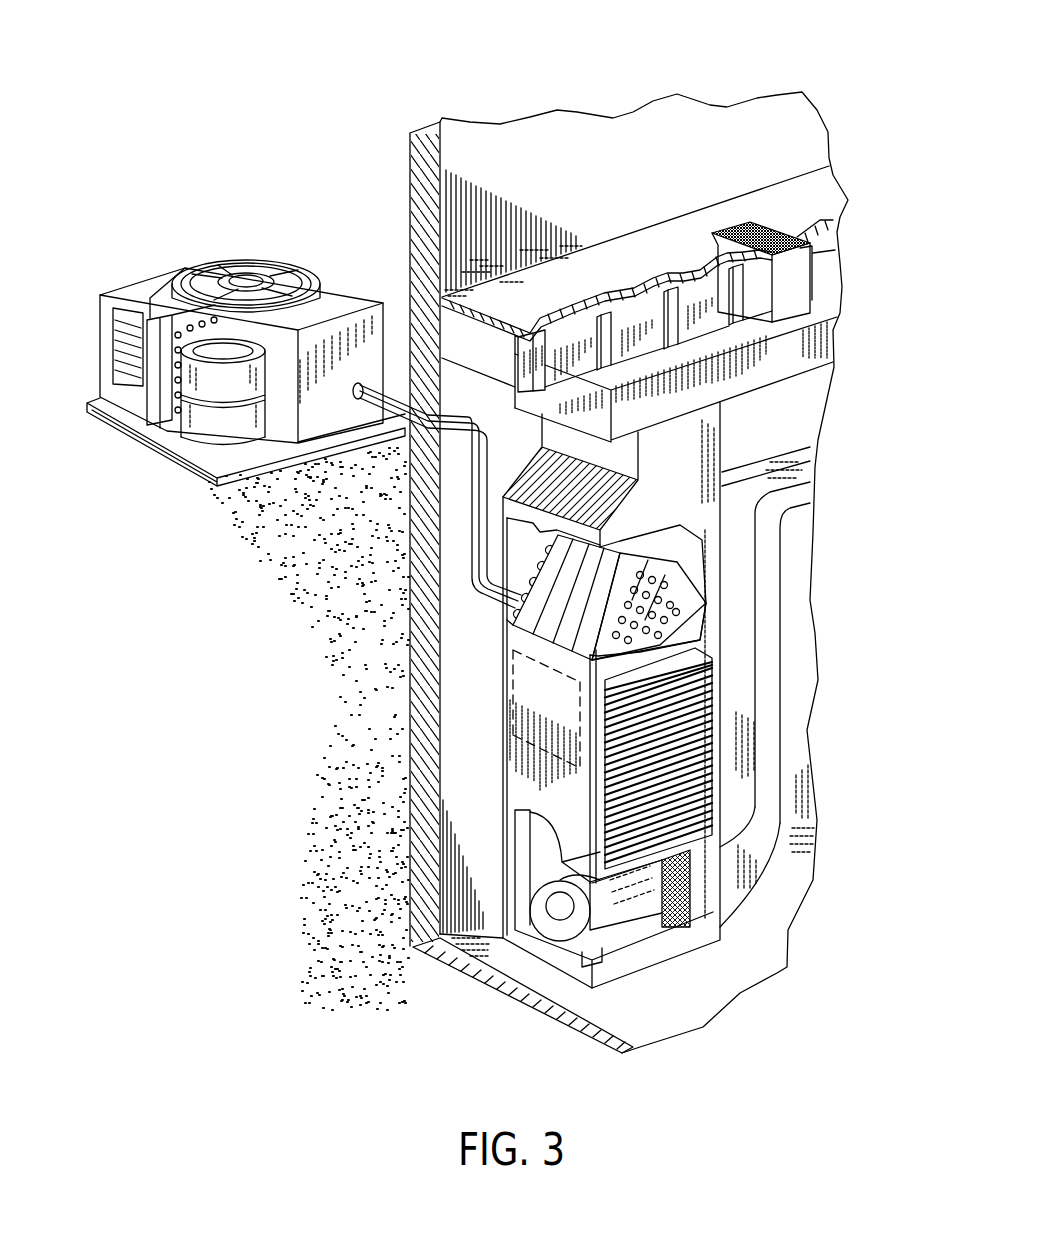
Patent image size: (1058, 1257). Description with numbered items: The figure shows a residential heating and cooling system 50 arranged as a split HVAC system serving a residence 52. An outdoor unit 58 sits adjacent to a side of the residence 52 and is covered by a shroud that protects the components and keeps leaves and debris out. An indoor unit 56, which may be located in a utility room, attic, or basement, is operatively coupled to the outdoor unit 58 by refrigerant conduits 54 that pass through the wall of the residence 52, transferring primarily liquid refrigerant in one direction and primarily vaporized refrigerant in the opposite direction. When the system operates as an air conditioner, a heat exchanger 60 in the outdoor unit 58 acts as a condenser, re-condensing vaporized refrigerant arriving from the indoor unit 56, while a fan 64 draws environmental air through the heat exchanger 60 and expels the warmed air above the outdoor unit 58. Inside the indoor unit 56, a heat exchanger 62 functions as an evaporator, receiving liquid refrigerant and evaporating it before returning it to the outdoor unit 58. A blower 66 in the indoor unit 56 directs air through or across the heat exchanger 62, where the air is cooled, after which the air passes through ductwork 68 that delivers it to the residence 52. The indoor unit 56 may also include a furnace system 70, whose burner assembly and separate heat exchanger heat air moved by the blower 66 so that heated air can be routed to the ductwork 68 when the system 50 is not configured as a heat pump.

The residential heating and cooling system 50 is at (241, 86).
The residence 52 is at (542, 138).
The refrigerant conduits 54 is at (473, 508).
The indoor unit 56 is at (481, 748).
The outdoor unit 58 is at (204, 248).
The heat exchanger 60 is at (178, 328).
The heat exchanger 62 is at (565, 622).
The fan 64 is at (265, 262).
The blower 66 is at (553, 930).
The ductwork 68 is at (766, 358).
The furnace system 70 is at (517, 700).